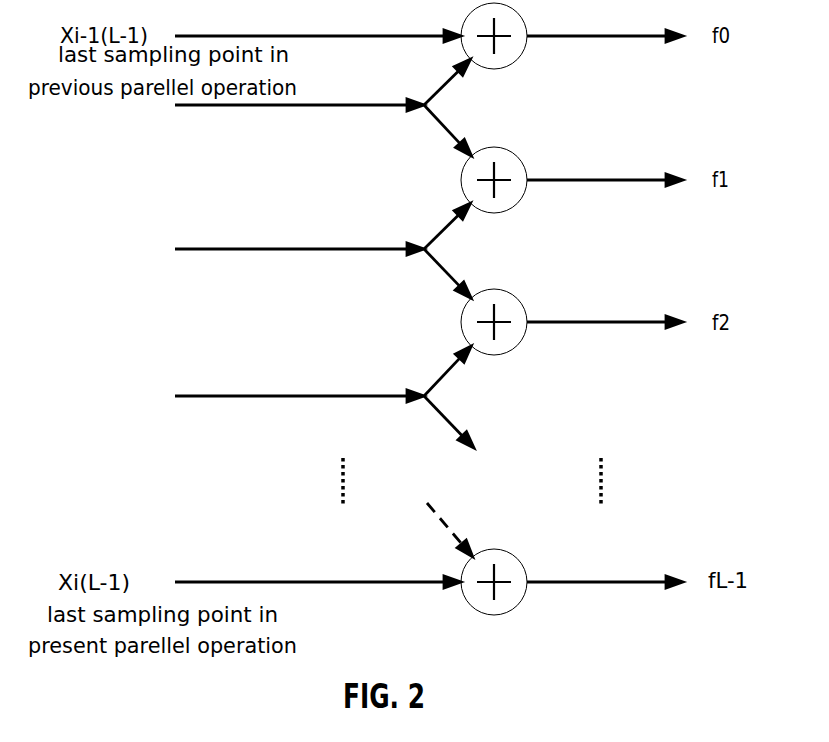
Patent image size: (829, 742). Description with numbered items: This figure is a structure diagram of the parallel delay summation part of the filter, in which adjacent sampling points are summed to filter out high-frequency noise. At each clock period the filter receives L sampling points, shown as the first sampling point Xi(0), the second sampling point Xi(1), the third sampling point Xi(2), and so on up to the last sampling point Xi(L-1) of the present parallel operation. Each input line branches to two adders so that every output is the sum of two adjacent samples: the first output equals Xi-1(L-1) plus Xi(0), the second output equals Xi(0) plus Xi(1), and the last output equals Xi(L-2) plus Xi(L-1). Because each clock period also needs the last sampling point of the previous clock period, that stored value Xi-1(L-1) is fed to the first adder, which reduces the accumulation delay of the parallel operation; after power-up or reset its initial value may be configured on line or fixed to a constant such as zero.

The input sampling point Xi 0 is at (261, 107).
The input sampling point Xi 1 is at (259, 250).
The input sampling point Xi 2 is at (261, 397).